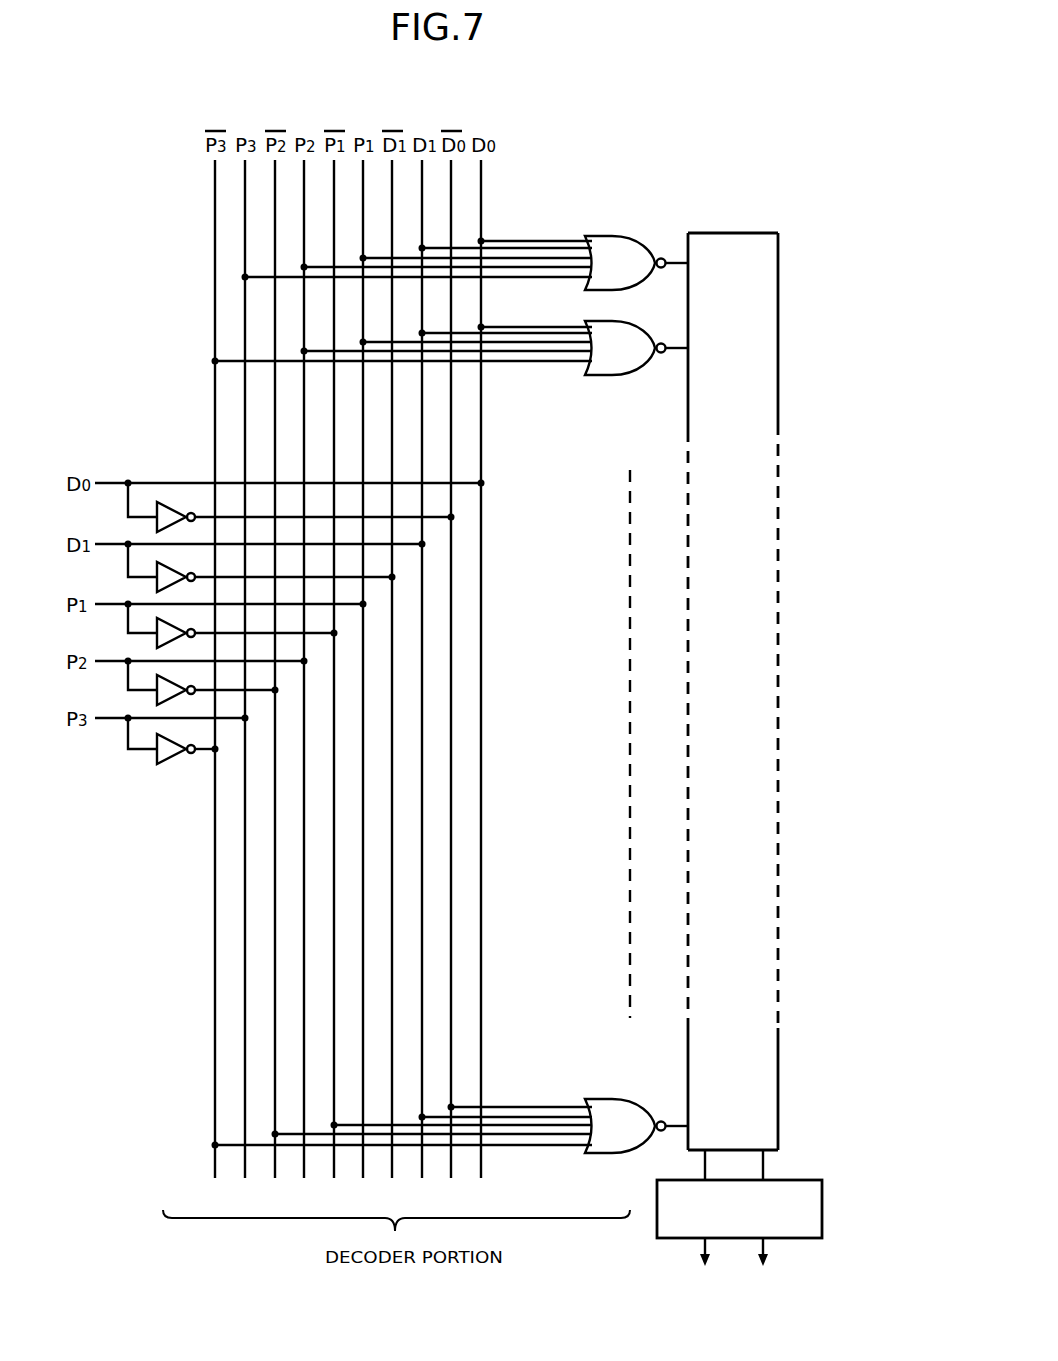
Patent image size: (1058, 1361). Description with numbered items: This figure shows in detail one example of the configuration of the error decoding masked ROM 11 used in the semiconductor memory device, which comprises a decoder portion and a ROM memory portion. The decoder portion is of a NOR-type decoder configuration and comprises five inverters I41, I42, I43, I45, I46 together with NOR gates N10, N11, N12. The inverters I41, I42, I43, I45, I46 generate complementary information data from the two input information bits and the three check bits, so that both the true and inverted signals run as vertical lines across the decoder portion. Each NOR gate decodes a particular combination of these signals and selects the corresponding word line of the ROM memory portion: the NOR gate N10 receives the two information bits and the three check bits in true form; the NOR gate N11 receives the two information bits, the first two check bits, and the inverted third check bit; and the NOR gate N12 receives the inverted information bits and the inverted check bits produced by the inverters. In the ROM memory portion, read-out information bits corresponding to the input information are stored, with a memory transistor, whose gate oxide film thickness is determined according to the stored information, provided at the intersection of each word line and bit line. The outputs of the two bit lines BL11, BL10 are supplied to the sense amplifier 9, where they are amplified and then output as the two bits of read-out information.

The error decoding masked ROM 11 is at (731, 173).
The sense amplifier 9 is at (759, 1236).
The NOR gate N10 is at (600, 235).
The NOR gate N11 is at (598, 321).
The NOR gate N12 is at (600, 1099).
The inverter I41 is at (306, 509).
The inverter I42 is at (276, 569).
The inverter I43 is at (247, 625).
The inverter I45 is at (218, 682).
The inverter I46 is at (188, 741).
The bit line BL10 is at (764, 1162).
The bit line BL11 is at (704, 1166).